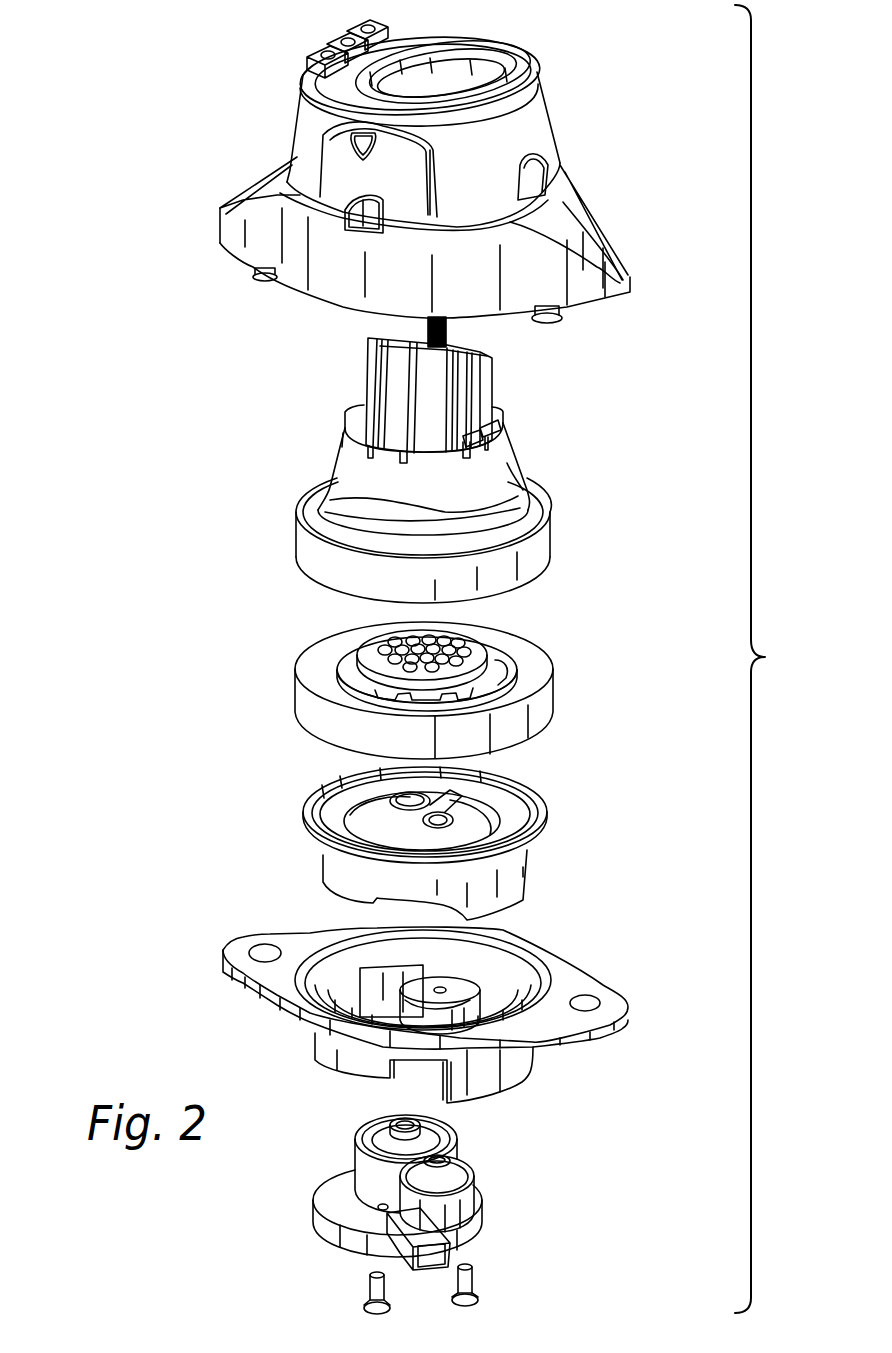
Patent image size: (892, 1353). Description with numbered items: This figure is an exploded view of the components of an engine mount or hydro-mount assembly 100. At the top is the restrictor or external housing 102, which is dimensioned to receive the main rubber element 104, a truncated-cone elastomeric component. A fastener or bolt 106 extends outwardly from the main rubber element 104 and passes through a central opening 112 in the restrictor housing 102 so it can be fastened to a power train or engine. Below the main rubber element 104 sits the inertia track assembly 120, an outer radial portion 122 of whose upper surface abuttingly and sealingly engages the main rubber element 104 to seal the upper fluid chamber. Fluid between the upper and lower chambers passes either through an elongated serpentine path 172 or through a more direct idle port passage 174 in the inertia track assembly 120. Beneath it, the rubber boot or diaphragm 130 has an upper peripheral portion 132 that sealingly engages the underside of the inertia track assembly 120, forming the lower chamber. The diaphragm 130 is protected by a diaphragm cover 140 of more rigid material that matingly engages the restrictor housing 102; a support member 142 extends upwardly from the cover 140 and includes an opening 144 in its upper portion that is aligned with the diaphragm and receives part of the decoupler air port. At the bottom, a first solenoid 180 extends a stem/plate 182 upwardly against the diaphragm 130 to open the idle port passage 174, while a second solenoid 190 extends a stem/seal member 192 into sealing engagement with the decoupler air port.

The hydro-mount assembly 100 is at (771, 659).
The restrictor housing 102 is at (442, 165).
The main rubber element 104 is at (466, 460).
The fastener 106 is at (447, 328).
The central opening 112 is at (452, 60).
The inertia track assembly 120 is at (437, 672).
The outer radial portion of upper surface 122 is at (310, 652).
The elongated serpentine path 172 is at (510, 660).
The diaphragm 130 is at (461, 838).
The upper peripheral portion 132 is at (310, 812).
The idle port passage 174 is at (443, 815).
The diaphragm cover 140 is at (423, 983).
The support member 142 is at (462, 987).
The opening 144 is at (442, 988).
The first solenoid 180 is at (420, 1202).
The stem/plate 182 is at (393, 1120).
The second solenoid 190 is at (494, 1175).
The stem/seal member 192 is at (445, 1155).